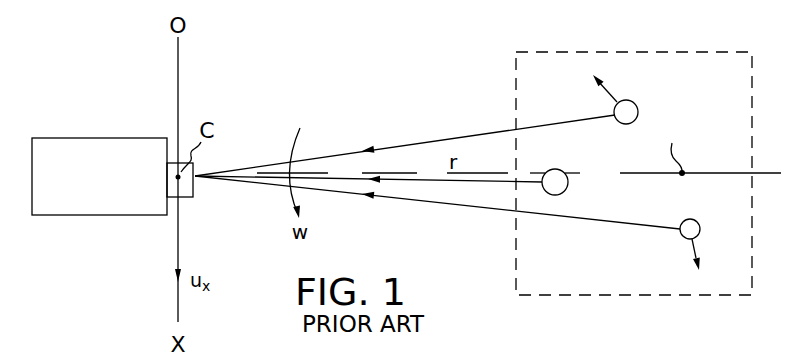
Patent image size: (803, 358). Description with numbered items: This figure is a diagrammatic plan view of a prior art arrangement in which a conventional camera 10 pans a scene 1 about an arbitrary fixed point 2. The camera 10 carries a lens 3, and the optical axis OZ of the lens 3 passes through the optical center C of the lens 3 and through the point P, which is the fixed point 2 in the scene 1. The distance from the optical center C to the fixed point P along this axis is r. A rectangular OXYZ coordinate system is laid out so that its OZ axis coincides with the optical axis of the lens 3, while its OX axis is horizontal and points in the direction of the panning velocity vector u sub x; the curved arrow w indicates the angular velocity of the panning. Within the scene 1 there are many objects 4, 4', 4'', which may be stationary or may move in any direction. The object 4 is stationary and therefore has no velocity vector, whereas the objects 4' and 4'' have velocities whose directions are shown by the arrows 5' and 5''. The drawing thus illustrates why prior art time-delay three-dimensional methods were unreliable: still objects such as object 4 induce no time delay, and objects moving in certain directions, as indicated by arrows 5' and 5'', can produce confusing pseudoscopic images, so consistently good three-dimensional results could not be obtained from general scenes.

The scene 1 is at (718, 54).
The arbitrary fixed point 2 is at (675, 165).
The camera lens 3 is at (182, 189).
The object 4 is at (573, 191).
The object 4' is at (642, 96).
The object 4'' is at (705, 215).
The velocity arrow 5' is at (595, 90).
The velocity arrow 5'' is at (717, 247).
The camera 10 is at (74, 180).